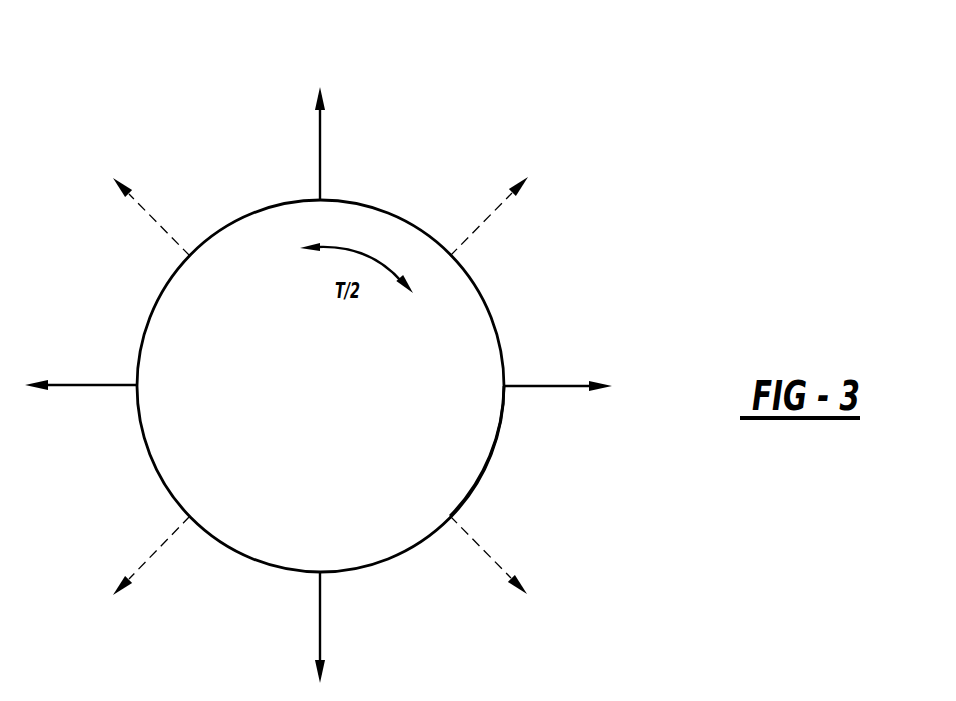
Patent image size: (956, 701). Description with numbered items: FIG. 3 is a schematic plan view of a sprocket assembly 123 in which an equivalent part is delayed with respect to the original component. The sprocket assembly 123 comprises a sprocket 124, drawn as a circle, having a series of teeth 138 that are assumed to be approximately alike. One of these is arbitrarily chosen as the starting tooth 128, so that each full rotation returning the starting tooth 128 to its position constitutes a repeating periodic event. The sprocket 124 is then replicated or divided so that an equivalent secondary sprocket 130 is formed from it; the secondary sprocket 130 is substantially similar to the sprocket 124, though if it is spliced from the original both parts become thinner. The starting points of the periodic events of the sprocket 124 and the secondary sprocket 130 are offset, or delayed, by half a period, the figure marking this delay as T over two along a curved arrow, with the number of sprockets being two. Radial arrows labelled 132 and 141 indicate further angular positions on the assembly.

The sprocket assembly 123 is at (504, 442).
The sprocket 124 is at (495, 327).
The starting tooth 128 is at (322, 628).
The secondary sprocket 130 is at (472, 228).
The lower right force component 132 is at (492, 553).
The teeth 138 is at (322, 144).
The upper left force component 141 is at (153, 212).